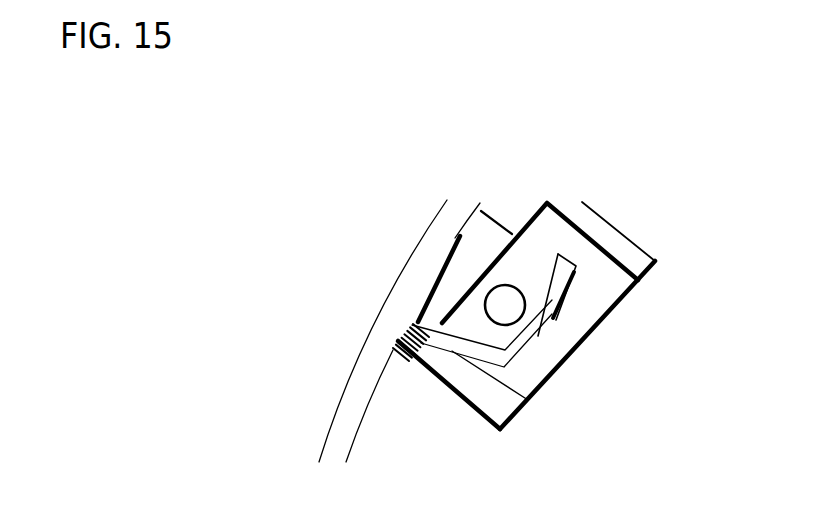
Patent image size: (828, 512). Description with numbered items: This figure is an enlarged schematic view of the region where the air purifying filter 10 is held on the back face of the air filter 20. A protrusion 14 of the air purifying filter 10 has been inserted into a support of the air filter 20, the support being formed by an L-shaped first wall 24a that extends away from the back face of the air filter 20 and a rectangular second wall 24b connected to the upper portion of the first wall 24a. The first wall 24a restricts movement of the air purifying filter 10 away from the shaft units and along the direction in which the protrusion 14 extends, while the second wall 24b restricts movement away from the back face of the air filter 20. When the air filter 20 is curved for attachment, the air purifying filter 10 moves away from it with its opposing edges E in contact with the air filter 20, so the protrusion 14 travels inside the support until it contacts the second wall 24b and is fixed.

The air purifying filter 10 is at (526, 293).
The protrusion 14 is at (586, 263).
The air filter 20 is at (383, 311).
The first wall 24a is at (462, 382).
The second wall 24b is at (606, 313).
The edge E is at (342, 363).